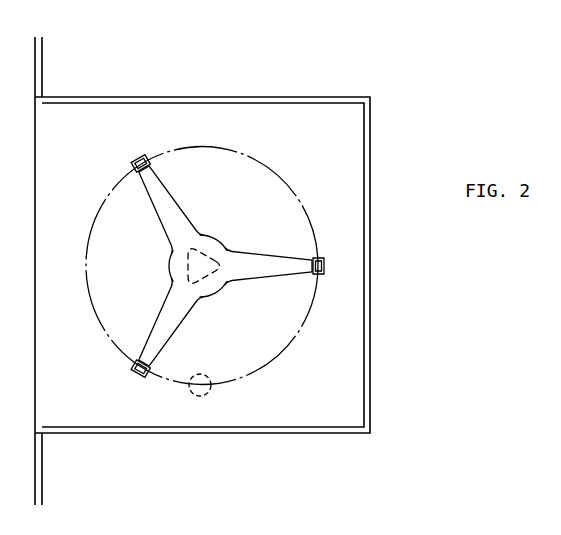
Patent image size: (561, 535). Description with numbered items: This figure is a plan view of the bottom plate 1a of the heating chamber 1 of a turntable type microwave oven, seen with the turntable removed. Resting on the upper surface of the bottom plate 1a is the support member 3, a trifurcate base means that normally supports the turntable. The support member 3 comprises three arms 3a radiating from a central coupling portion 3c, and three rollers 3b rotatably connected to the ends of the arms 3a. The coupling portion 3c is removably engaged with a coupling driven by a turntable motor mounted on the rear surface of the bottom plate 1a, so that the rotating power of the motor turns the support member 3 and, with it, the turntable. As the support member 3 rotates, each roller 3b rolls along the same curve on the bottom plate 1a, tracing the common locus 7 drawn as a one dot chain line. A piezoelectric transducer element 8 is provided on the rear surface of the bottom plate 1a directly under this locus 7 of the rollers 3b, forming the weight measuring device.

The heating chamber 1 is at (127, 96).
The bottom plate 1a is at (303, 392).
The support member 3 is at (246, 250).
The arms 3a is at (175, 218).
The rollers 3b is at (140, 162).
The coupling portion 3c is at (215, 282).
The locus 7 is at (312, 222).
The piezoelectric transducer element 8 is at (199, 397).